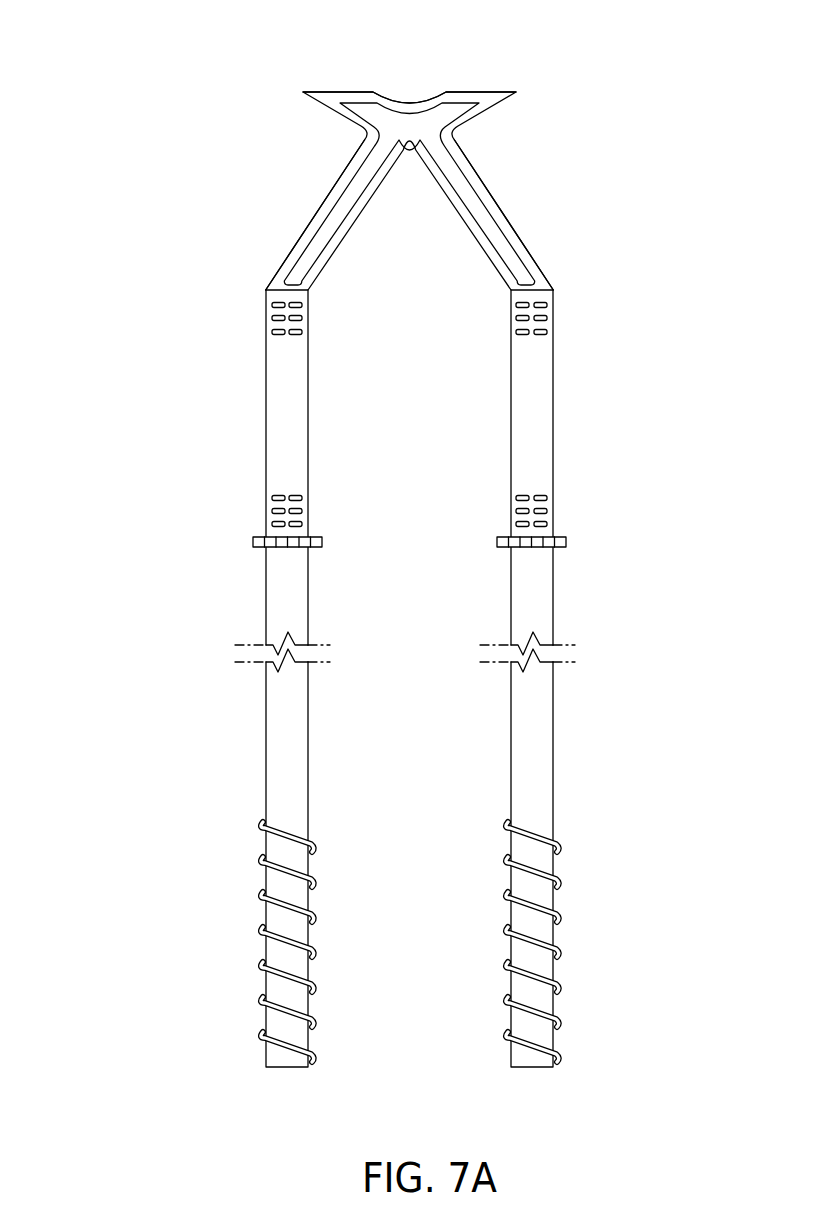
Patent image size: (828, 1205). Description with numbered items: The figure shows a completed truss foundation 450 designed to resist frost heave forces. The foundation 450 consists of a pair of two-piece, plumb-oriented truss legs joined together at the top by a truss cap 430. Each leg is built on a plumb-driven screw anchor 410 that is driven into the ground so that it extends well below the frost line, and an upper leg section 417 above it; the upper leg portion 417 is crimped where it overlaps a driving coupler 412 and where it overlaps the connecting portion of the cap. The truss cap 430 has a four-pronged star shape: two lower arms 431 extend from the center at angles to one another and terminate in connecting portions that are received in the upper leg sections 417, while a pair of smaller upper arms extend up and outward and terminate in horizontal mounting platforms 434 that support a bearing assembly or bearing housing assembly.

The truss foundation 450 is at (195, 110).
The truss cap 430 is at (530, 135).
The horizontal mounting platform 434 is at (337, 92).
The lower arm 431 is at (315, 213).
The upper leg section 417 is at (266, 414).
The driving coupler 412 is at (565, 540).
The screw anchor 410 is at (553, 752).